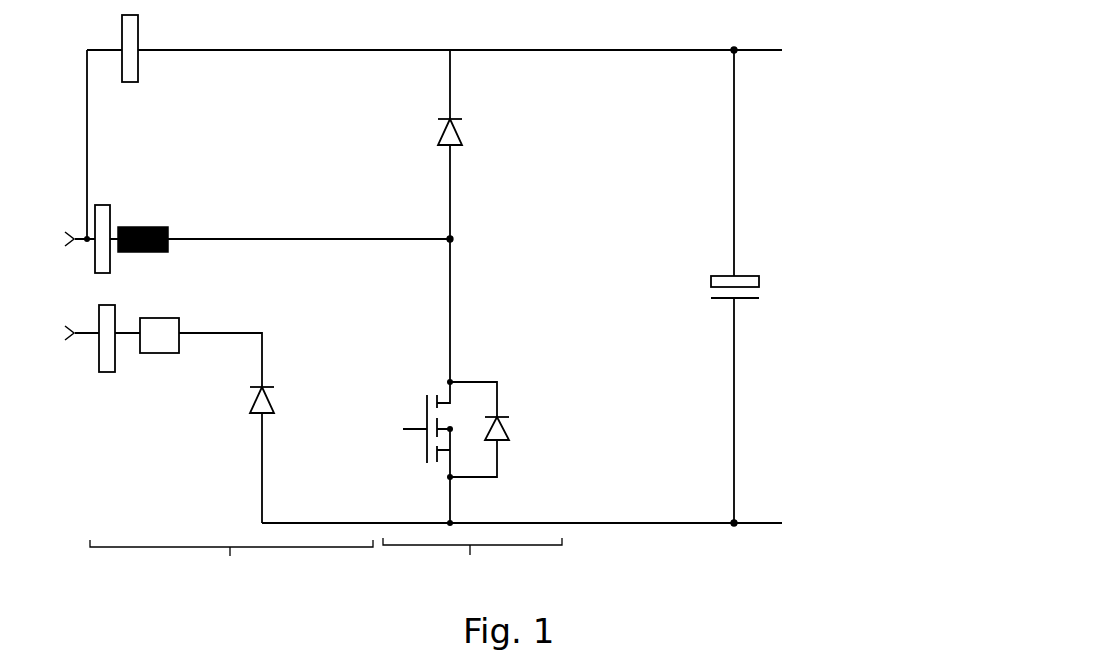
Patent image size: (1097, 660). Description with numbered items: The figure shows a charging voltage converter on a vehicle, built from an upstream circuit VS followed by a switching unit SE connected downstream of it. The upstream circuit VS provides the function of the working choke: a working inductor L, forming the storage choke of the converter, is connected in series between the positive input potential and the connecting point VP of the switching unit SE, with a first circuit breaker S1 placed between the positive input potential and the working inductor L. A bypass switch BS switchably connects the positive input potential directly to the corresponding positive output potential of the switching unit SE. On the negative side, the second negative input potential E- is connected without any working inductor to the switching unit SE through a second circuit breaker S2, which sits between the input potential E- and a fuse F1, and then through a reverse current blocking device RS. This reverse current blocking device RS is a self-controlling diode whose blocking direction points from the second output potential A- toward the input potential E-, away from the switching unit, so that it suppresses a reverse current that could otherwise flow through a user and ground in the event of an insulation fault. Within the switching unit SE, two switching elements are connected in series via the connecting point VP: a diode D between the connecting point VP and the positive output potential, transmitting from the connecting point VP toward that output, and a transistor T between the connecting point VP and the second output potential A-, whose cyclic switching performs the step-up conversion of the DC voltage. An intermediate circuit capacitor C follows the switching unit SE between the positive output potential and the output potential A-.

The second negative input potential E- is at (53, 334).
The bypass switch BS is at (134, 82).
The first circuit breaker S1 is at (105, 205).
The working inductor L is at (143, 227).
The second circuit breaker S2 is at (112, 305).
The fuse F1 is at (178, 318).
The reverse current blocking device RS is at (241, 383).
The diode D is at (458, 122).
The connecting point VP is at (473, 243).
The transistor T is at (496, 382).
The intermediate circuit capacitor C is at (735, 273).
The second output potential A- is at (746, 516).
The upstream circuit VS is at (231, 566).
The switching unit SE is at (472, 565).